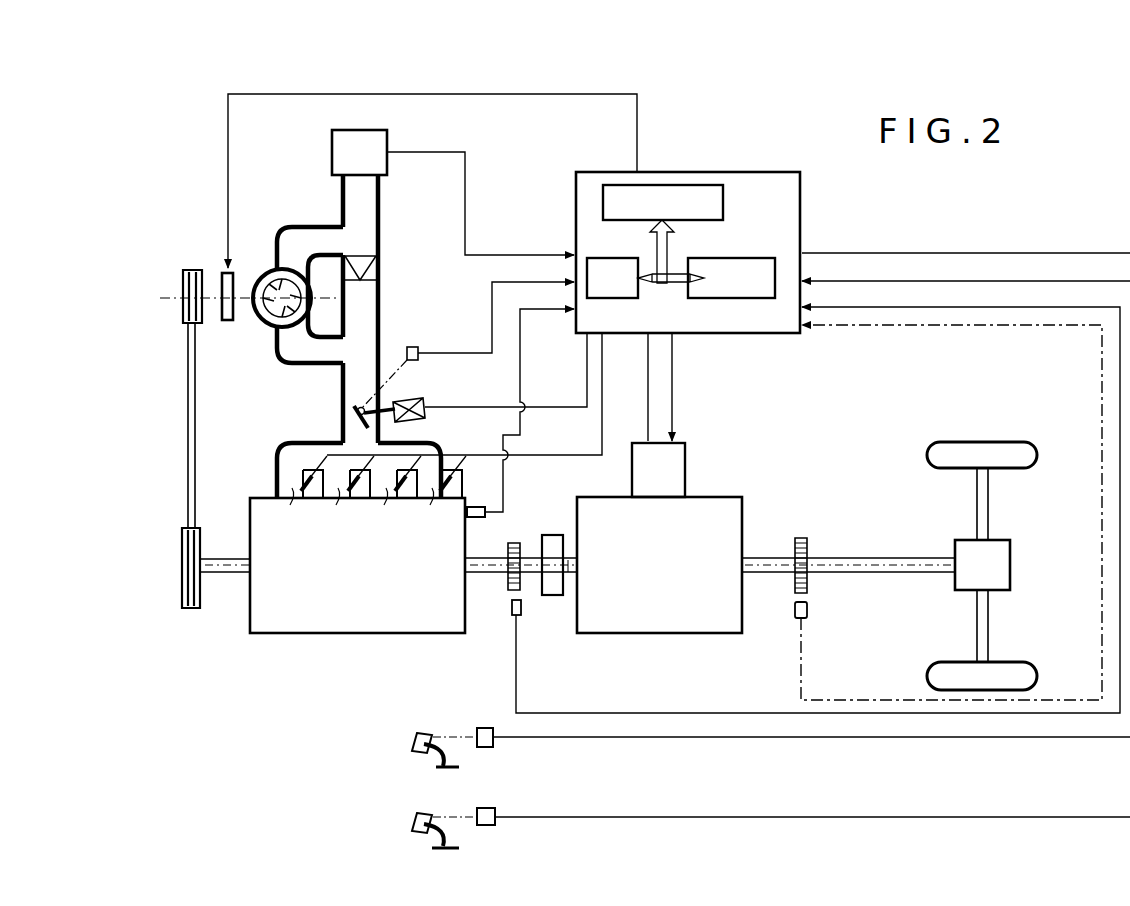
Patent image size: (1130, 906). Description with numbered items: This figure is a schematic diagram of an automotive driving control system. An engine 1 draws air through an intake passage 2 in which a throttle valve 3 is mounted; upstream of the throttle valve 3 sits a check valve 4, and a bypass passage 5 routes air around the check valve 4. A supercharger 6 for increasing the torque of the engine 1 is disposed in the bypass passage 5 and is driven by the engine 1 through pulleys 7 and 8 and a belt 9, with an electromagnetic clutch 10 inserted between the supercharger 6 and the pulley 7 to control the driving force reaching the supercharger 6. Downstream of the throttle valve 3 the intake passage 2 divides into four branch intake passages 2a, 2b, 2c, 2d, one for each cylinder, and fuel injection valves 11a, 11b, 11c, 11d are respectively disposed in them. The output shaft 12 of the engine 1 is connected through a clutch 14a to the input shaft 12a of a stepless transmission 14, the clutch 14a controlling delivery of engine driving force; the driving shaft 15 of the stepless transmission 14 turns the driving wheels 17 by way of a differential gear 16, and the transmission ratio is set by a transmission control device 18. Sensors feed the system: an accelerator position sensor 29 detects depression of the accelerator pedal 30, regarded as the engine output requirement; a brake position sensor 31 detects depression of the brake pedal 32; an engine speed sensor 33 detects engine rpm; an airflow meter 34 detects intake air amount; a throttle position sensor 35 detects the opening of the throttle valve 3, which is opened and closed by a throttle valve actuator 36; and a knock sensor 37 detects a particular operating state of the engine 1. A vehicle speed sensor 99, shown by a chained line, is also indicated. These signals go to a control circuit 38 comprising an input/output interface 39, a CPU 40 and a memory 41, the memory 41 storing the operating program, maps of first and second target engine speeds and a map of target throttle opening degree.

The engine 1 is at (365, 625).
The intake passage 2 is at (343, 385).
The intake passage 2a is at (275, 513).
The intake passage 2b is at (325, 513).
The intake passage 2c is at (374, 513).
The intake passage 2d is at (422, 513).
The throttle valve 3 is at (353, 423).
The check valve 4 is at (380, 266).
The bypass passage 5 is at (318, 233).
The supercharger 6 is at (300, 303).
The pulley 7 is at (183, 298).
The pulley 8 is at (181, 536).
The belt 9 is at (186, 458).
The electromagnetic clutch 10 is at (215, 272).
The fuel injection valve 11a is at (310, 500).
The fuel injection valve 11b is at (357, 500).
The fuel injection valve 11c is at (404, 500).
The fuel injection valve 11d is at (449, 500).
The output shaft 12 is at (487, 578).
The input shaft 12a is at (570, 580).
The stepless transmission 14 is at (745, 515).
The clutch 14a is at (553, 530).
The driving shaft 15 is at (852, 555).
The differential gear 16 is at (960, 535).
The driving wheels 17 is at (1020, 440).
The transmission control device 18 is at (686, 468).
The accelerator position sensor 29 is at (486, 725).
The accelerator pedal 30 is at (428, 735).
The brake position sensor 31 is at (488, 806).
The brake pedal 32 is at (422, 818).
The engine speed sensor 33 is at (510, 620).
The airflow meter 34 is at (390, 136).
The throttle position sensor 35 is at (468, 345).
The throttle valve actuator 36 is at (490, 377).
The knock sensor 37 is at (478, 505).
The control circuit 38 is at (803, 200).
The input/output interface 39 is at (673, 182).
The CPU 40 is at (612, 256).
The memory 41 is at (723, 256).
The vehicle speed sensor 99 is at (808, 605).